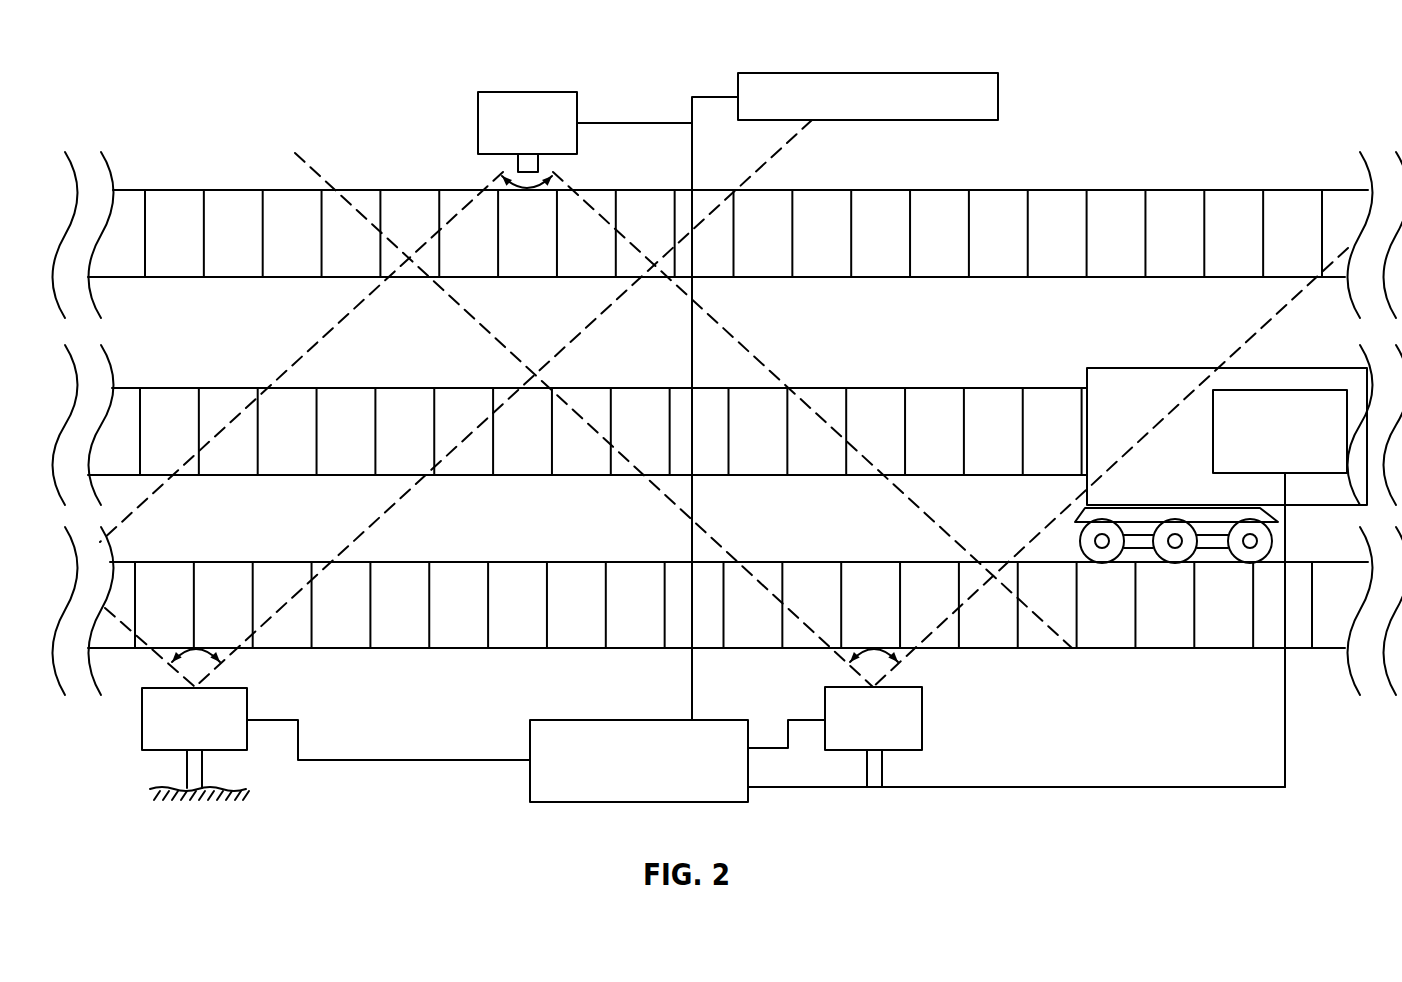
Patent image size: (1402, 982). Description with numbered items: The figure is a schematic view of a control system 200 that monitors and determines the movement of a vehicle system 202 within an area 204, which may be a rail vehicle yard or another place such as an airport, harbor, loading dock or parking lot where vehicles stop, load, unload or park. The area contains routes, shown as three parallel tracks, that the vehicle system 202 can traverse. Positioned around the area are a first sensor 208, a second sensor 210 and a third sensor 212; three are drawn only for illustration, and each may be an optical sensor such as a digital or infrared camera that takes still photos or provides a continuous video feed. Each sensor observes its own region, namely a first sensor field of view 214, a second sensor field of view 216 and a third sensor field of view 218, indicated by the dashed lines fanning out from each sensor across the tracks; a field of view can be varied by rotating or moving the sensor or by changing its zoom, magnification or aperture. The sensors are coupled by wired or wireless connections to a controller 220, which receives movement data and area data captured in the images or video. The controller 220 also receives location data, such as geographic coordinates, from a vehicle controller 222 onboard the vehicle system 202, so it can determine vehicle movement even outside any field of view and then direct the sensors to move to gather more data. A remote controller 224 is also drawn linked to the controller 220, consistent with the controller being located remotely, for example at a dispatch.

The control system 200 is at (1147, 118).
The vehicle system 202 is at (1275, 368).
The area 204 is at (272, 118).
The first sensor 208 is at (922, 715).
The second sensor 210 is at (247, 738).
The third sensor 212 is at (540, 92).
The first sensor field of view 214 is at (897, 658).
The second sensor field of view 216 is at (222, 658).
The third sensor field of view 218 is at (552, 177).
The controller 220 is at (715, 720).
The vehicle controller 222 is at (1213, 463).
The remote controller 224 is at (951, 73).